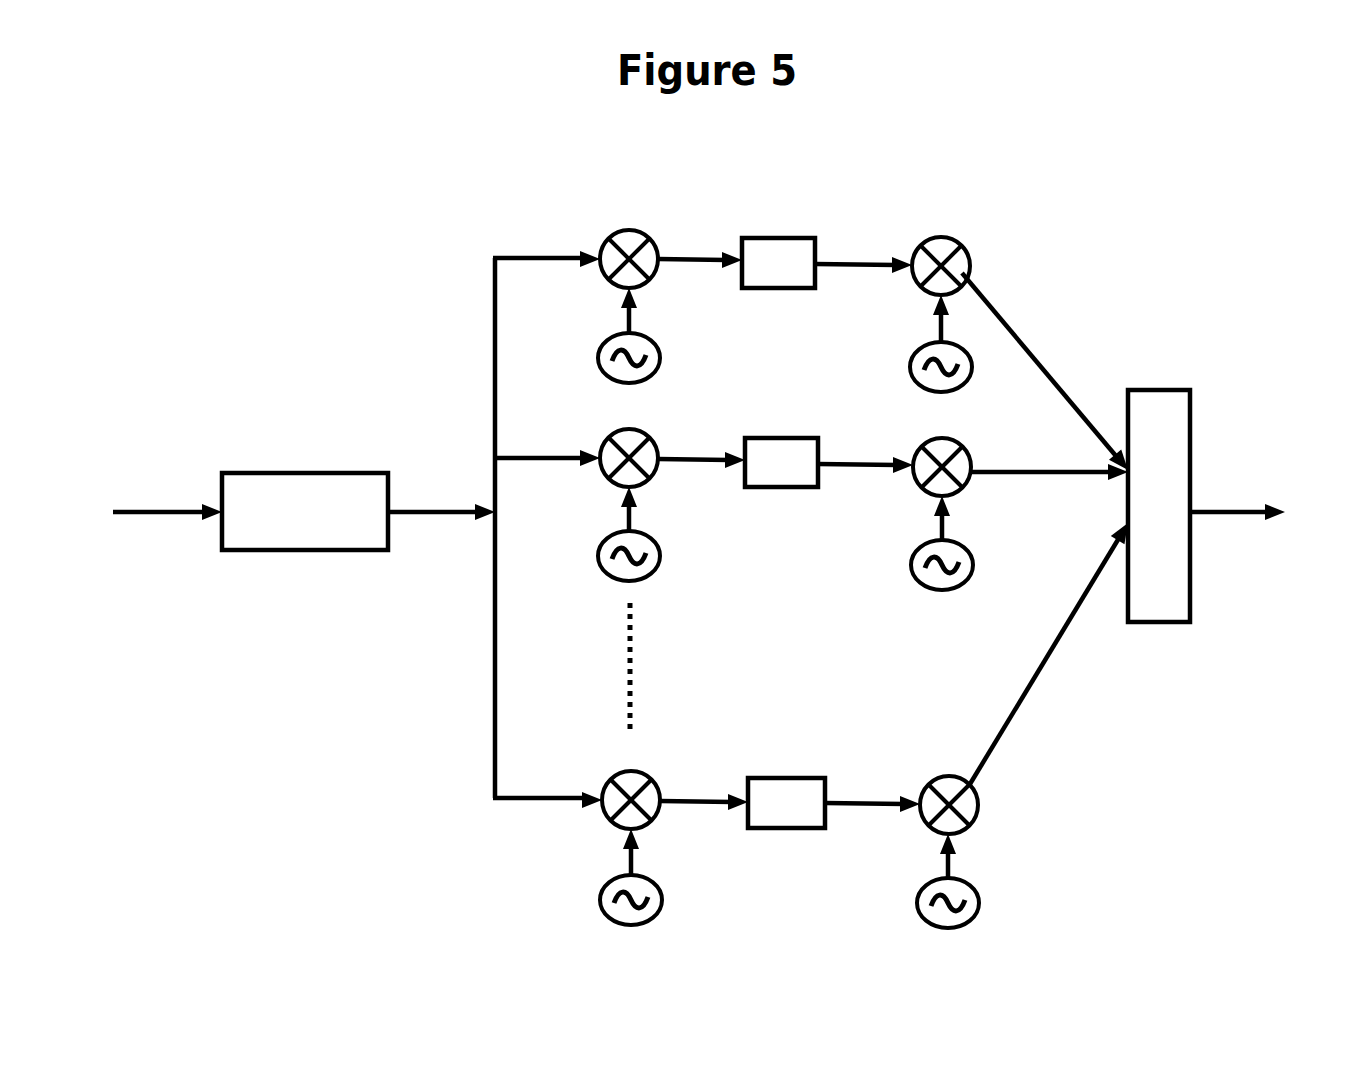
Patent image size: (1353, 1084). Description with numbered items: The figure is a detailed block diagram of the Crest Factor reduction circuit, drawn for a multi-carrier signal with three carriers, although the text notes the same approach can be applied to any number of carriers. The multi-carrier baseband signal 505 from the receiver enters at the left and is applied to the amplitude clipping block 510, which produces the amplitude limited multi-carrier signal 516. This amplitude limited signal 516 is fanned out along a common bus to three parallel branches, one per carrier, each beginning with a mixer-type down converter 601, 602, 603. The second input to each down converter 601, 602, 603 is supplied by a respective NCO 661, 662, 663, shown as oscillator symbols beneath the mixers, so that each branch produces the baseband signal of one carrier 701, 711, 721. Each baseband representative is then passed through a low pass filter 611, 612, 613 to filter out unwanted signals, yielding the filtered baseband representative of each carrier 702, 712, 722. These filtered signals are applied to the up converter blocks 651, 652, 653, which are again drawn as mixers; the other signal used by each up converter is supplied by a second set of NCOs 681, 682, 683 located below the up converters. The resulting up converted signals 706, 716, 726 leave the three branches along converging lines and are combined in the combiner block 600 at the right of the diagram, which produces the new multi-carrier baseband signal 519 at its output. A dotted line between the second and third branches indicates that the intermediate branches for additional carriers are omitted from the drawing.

The multi-carrier baseband signal 505 is at (167, 501).
The amplitude clipping block 510 is at (305, 529).
The amplitude limited multi-carrier signal 516 is at (495, 529).
The combiner block 600 is at (1159, 485).
The down converter 601 is at (629, 247).
The down converter 602 is at (629, 445).
The down converter 603 is at (631, 786).
The low pass filter 611 is at (778, 251).
The low pass filter 612 is at (781, 450).
The low pass filter 613 is at (786, 790).
The up converter block 651 is at (941, 254).
The up converter block 652 is at (942, 454).
The up converter block 653 is at (949, 791).
The NCO 661 is at (644, 335).
The NCO 662 is at (644, 534).
The NCO 663 is at (647, 877).
The NCO 681 is at (966, 343).
The NCO 682 is at (967, 543).
The NCO 683 is at (927, 881).
The baseband signal of carrier 701 is at (700, 272).
The filtered baseband representative of carrier 702 is at (863, 277).
The up converted signal 706 is at (1048, 374).
The baseband signal of carrier 711 is at (701, 472).
The filtered baseband representative of carrier 712 is at (865, 476).
The up converted signal 716 is at (1049, 485).
The baseband signal of carrier 721 is at (704, 812).
The filtered baseband representative of carrier 722 is at (872, 816).
The up converted signal 726 is at (1052, 651).
The new multi-carrier baseband signal 519 is at (1237, 490).